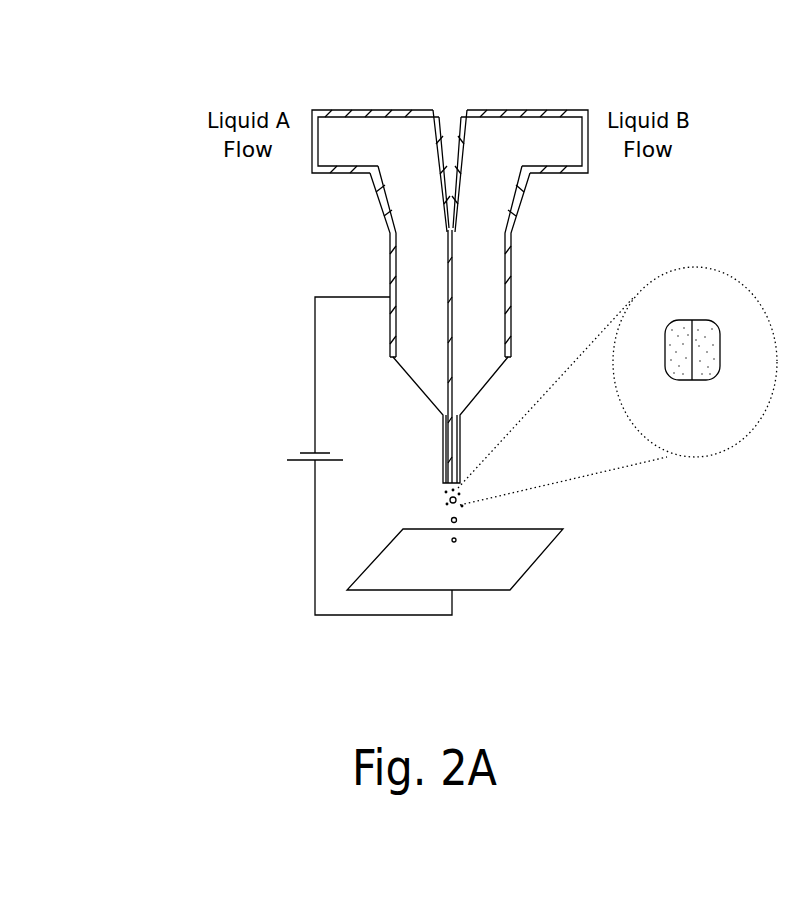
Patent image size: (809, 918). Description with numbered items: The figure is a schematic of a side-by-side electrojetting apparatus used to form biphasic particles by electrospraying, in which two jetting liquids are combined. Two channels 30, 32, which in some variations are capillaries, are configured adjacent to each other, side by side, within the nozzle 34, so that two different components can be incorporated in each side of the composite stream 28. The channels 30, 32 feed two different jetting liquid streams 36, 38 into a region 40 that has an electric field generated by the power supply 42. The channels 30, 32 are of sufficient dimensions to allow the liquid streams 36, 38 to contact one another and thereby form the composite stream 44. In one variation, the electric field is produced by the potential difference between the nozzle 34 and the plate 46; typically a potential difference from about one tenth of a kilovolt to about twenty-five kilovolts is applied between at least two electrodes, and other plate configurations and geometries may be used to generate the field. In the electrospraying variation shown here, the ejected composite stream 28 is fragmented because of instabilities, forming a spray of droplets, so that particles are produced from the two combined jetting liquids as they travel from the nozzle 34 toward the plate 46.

The composite stream 28 is at (433, 448).
The channel 30 is at (380, 205).
The channel 32 is at (520, 205).
The nozzle 34 is at (349, 236).
The jetting liquid stream 36 is at (418, 278).
The jetting liquid stream 38 is at (482, 275).
The region 40 is at (400, 496).
The power supply 42 is at (275, 455).
The composite stream 44 is at (483, 567).
The plate 46 is at (700, 308).